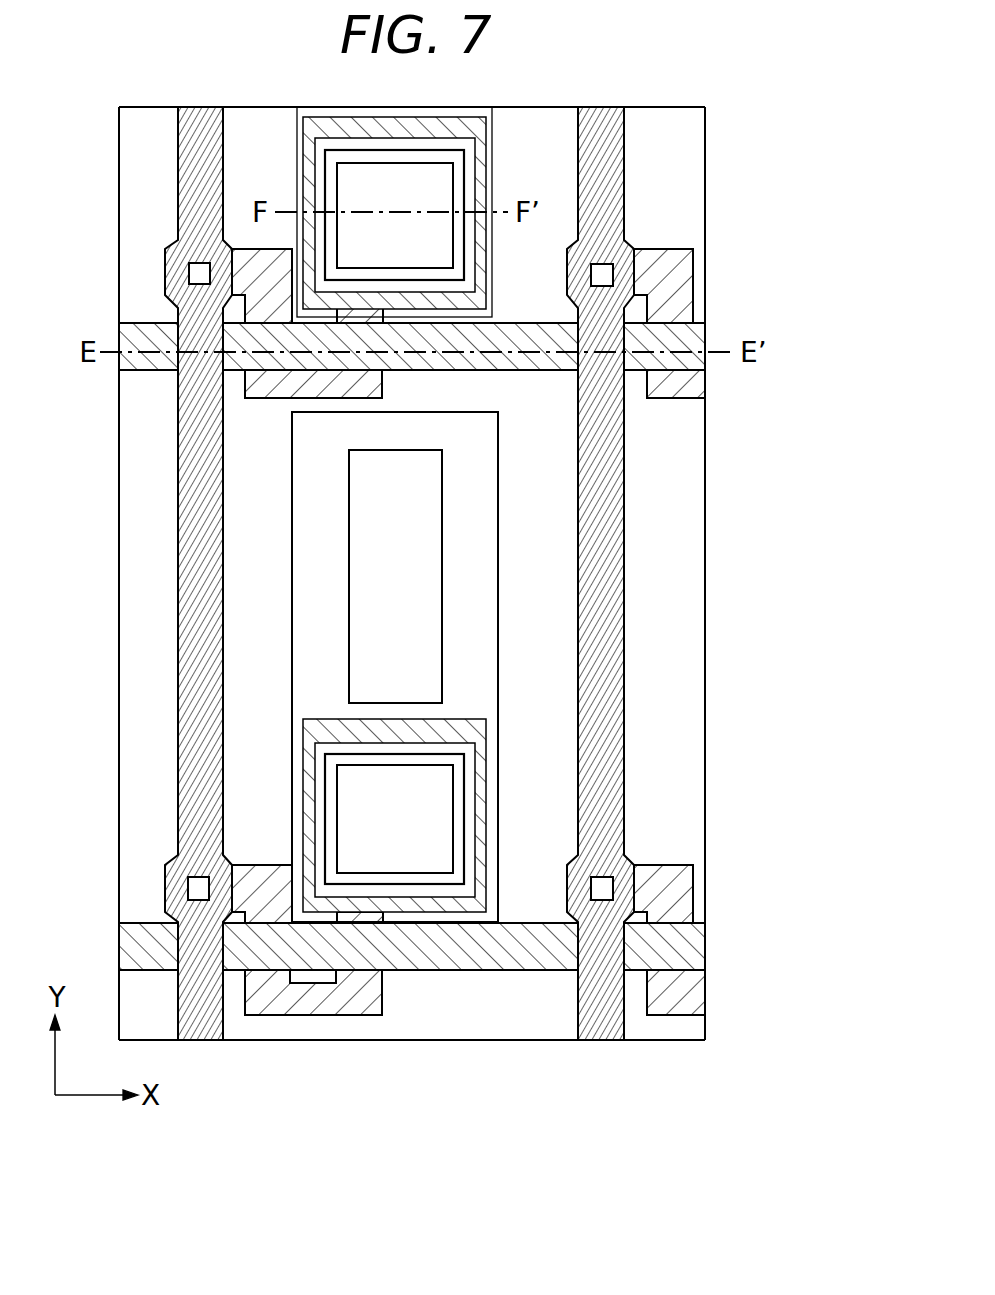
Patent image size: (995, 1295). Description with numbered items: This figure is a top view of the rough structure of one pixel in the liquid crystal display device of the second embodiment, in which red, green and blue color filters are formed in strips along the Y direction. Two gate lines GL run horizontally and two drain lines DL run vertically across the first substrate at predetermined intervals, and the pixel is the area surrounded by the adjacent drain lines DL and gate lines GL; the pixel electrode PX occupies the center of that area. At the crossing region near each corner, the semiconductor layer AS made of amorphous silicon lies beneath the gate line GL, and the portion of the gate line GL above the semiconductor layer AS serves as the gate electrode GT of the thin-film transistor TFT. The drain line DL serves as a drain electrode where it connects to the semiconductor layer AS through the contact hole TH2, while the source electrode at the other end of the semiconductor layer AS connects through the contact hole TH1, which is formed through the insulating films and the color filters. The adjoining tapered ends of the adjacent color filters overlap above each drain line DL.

The drain line DL is at (612, 219).
The gate line GL is at (470, 958).
The gate electrode GT is at (687, 952).
The thin-film transistor TFT is at (402, 987).
The semiconductor layer AS is at (313, 1007).
The pixel electrode PX is at (473, 637).
The contact hole TH1 is at (355, 820).
The contact hole TH2 is at (198, 890).